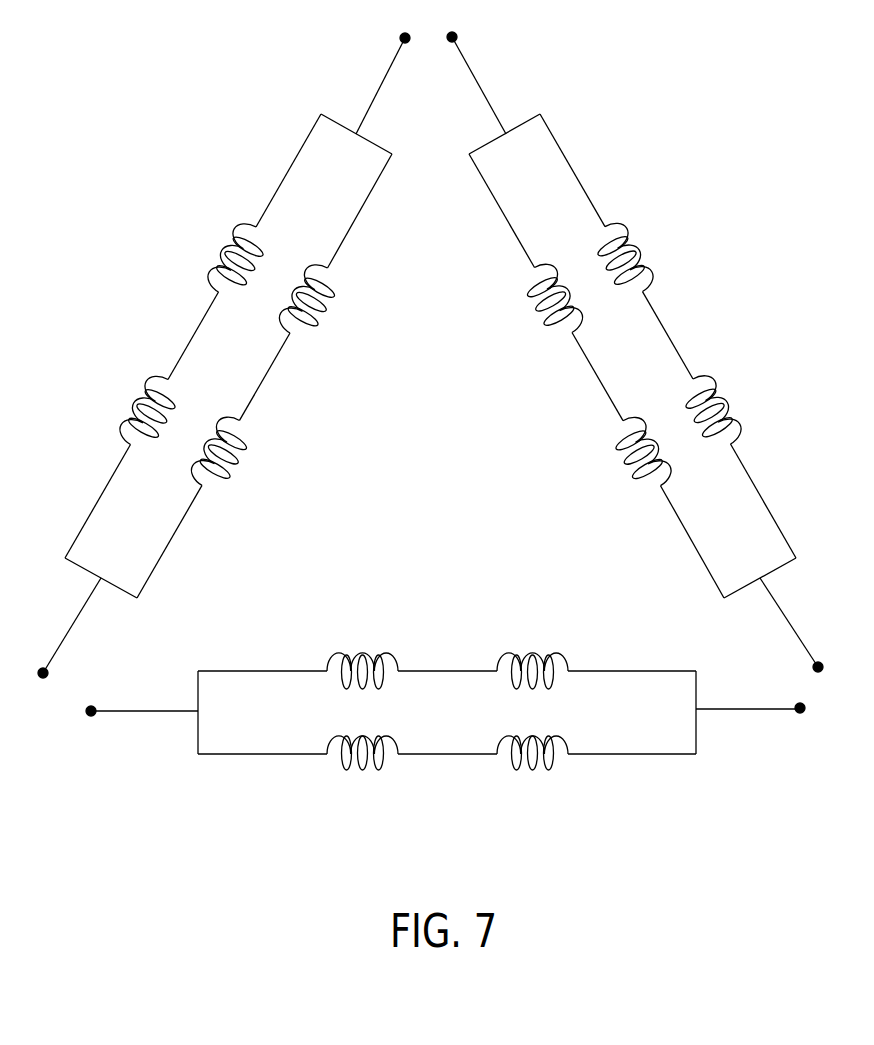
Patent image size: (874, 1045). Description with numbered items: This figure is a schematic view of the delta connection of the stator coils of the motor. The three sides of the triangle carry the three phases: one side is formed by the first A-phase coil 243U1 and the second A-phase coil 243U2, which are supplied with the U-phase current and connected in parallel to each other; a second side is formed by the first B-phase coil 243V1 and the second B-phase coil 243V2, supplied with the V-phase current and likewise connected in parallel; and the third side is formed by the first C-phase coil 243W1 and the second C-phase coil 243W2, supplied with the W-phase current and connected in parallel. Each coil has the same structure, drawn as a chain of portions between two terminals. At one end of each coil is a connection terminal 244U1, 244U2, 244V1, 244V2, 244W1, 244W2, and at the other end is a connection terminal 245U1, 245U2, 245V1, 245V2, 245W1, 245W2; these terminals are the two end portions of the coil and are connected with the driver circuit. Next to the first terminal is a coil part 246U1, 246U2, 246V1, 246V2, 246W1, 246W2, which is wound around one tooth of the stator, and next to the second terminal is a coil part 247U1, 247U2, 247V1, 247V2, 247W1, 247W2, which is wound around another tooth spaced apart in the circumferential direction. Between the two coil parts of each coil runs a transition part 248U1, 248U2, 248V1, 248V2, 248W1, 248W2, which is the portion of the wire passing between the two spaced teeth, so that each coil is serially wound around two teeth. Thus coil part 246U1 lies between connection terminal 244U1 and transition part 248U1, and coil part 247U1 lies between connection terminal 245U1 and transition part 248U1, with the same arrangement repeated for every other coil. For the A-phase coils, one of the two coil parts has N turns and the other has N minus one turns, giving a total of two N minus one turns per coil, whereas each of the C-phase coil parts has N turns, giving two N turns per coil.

The first A-phase coil 243U1 is at (165, 336).
The second A-phase coil 243U2 is at (290, 376).
The first B-phase coil 243V1 is at (447, 811).
The second B-phase coil 243V2 is at (447, 616).
The first C-phase coil 243W1 is at (702, 336).
The second C-phase coil 243W2 is at (580, 376).
The connection terminal 244U1 is at (281, 182).
The connection terminal 244U2 is at (173, 537).
The connection terminal 244V1 is at (257, 756).
The connection terminal 244V2 is at (630, 670).
The connection terminal 244W1 is at (580, 180).
The connection terminal 244W2 is at (688, 538).
The connection terminal 245U1 is at (97, 502).
The connection terminal 245U2 is at (366, 200).
The connection terminal 245V1 is at (635, 756).
The connection terminal 245V2 is at (267, 670).
The connection terminal 245W1 is at (763, 500).
The connection terminal 245W2 is at (516, 236).
The coil part 246U1 is at (222, 253).
The coil part 246U2 is at (233, 468).
The coil part 246V1 is at (357, 770).
The coil part 246V2 is at (525, 653).
The coil part 246W1 is at (643, 252).
The coil part 246W2 is at (628, 458).
The coil part 247U1 is at (130, 408).
The coil part 247U2 is at (320, 312).
The coil part 247V1 is at (528, 770).
The coil part 247V2 is at (362, 653).
The coil part 247W1 is at (726, 405).
The coil part 247W2 is at (543, 303).
The transition part 248U1 is at (193, 343).
The transition part 248U2 is at (263, 375).
The transition part 248V1 is at (440, 756).
The transition part 248V2 is at (445, 670).
The transition part 248W1 is at (668, 337).
The transition part 248W2 is at (591, 366).